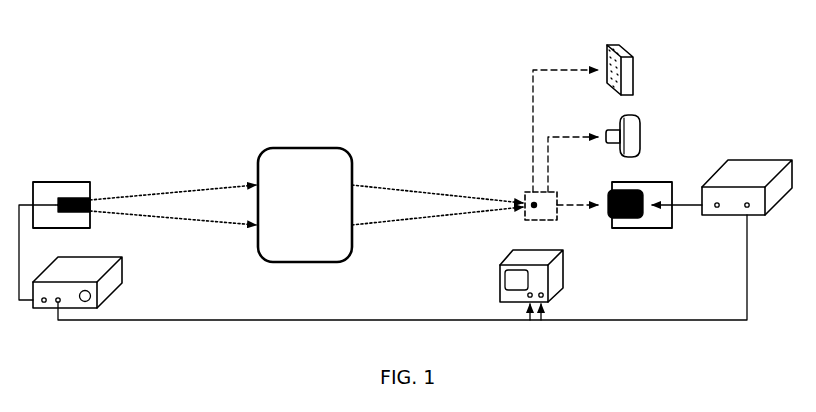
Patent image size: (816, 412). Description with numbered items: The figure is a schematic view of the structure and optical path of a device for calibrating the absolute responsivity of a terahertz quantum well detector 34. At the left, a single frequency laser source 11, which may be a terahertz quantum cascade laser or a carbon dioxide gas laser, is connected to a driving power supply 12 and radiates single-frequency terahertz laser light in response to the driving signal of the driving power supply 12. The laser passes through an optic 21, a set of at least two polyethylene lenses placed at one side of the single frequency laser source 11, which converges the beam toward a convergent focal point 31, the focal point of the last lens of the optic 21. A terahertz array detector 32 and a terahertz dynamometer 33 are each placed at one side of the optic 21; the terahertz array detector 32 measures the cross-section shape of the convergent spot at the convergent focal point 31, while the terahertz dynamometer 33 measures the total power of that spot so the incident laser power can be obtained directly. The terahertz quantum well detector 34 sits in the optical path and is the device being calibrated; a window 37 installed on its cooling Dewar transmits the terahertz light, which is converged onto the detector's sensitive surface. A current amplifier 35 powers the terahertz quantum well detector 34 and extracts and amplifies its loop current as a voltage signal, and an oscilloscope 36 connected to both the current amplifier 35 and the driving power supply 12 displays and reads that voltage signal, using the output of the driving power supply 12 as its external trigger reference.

The single frequency laser source 11 is at (50, 188).
The driving power supply 12 is at (113, 277).
The optic 21 is at (301, 158).
The convergent focal point 31 is at (527, 192).
The terahertz array detector 32 is at (630, 80).
The terahertz dynamometer 33 is at (637, 132).
The terahertz quantum well detector 34 is at (645, 190).
The current amplifier 35 is at (748, 172).
The oscilloscope 36 is at (515, 262).
The window 37 is at (603, 218).